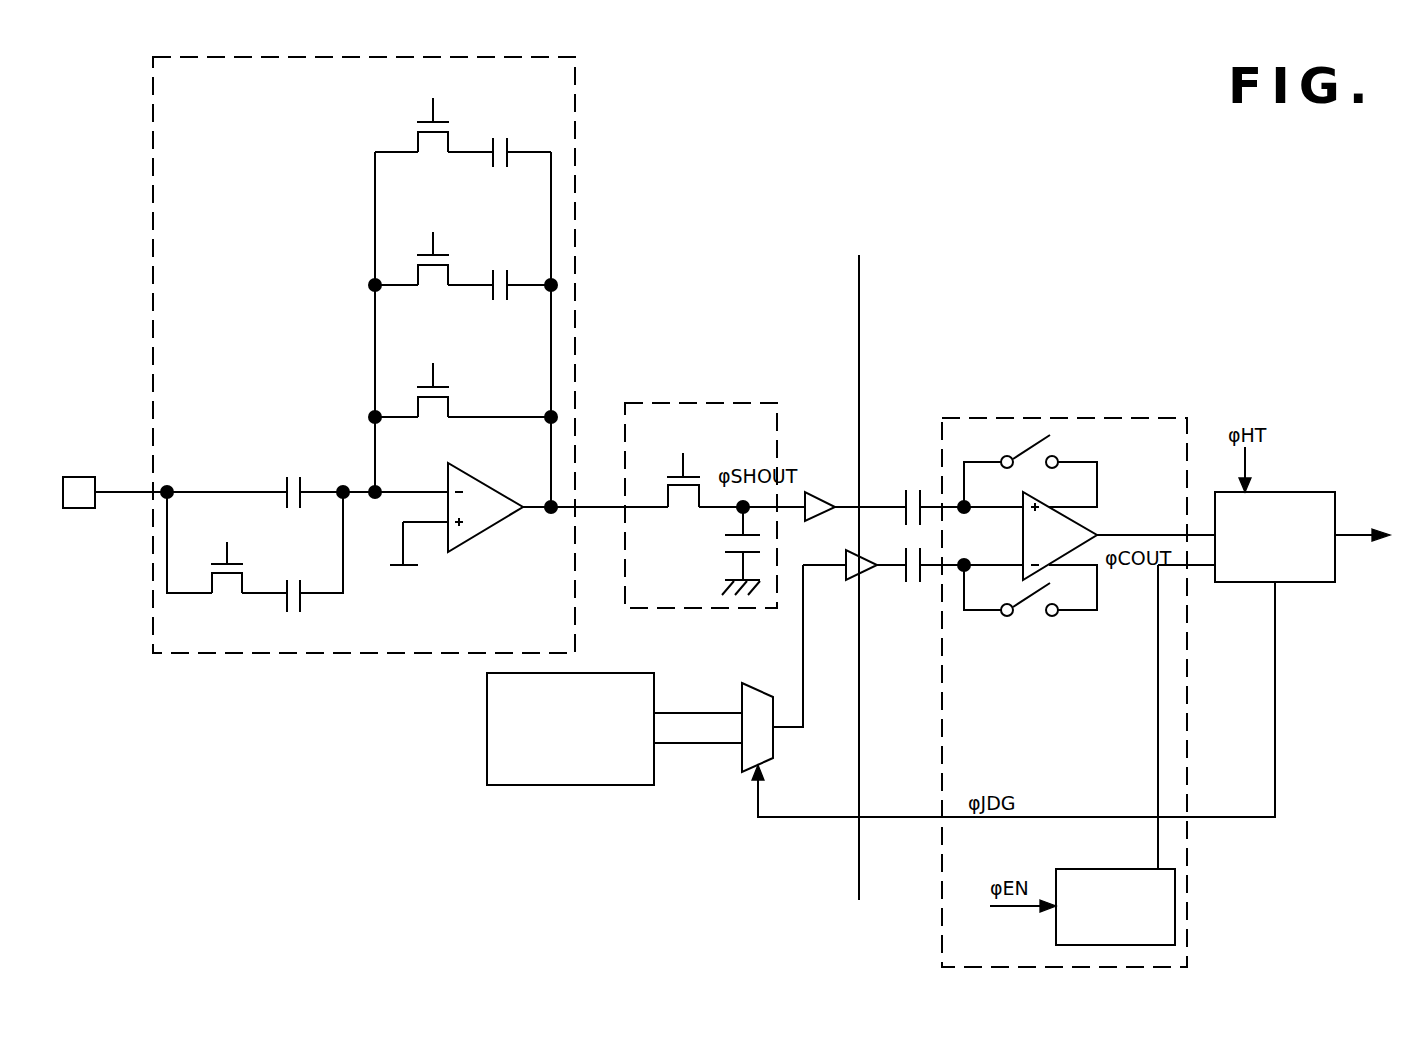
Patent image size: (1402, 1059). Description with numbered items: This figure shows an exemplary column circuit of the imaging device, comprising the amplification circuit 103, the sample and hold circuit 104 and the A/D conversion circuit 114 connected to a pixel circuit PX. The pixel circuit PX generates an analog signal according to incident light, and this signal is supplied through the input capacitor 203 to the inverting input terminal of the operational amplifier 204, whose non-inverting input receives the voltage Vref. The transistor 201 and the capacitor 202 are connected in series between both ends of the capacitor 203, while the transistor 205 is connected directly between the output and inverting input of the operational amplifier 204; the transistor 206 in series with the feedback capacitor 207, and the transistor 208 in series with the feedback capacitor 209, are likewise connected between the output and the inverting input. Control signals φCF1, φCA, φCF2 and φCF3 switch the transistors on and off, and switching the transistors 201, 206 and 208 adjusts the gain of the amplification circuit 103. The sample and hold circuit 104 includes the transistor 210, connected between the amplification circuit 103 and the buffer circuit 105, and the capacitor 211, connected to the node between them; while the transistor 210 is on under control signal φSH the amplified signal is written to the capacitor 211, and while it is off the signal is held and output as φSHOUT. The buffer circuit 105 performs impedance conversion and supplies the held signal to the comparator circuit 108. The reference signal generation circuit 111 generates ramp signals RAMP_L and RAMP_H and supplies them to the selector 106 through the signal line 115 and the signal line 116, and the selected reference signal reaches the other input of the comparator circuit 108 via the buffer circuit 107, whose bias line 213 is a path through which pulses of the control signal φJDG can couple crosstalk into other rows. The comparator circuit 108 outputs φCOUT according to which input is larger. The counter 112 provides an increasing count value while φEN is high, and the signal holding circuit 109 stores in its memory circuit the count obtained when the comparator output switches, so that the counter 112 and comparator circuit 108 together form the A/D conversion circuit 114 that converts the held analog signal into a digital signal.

The amplification circuit 103 is at (575, 200).
The sample and hold circuit 104 is at (725, 403).
The buffer circuit 105 is at (815, 519).
The selector 106 is at (761, 663).
The buffer circuit 107 is at (866, 573).
The comparator circuit 108 is at (1093, 527).
The signal holding circuit 109 is at (1310, 492).
The reference signal generation circuit 111 is at (610, 673).
The counter 112 is at (1080, 869).
The A/D conversion circuit 114 is at (1057, 418).
The signal line 115 is at (688, 743).
The signal line 116 is at (690, 713).
The transistor 201 is at (227, 586).
The capacitor 202 is at (291, 580).
The capacitor 203 is at (291, 477).
The operational amplifier 204 is at (480, 484).
The transistor 205 is at (432, 410).
The transistor 206 is at (432, 278).
The capacitor 207 is at (497, 270).
The transistor 208 is at (432, 145).
The capacitor 209 is at (507, 115).
The transistor 210 is at (688, 503).
The capacitor 211 is at (730, 545).
The bias line 213 is at (861, 352).
The pixel circuit PX is at (77, 476).